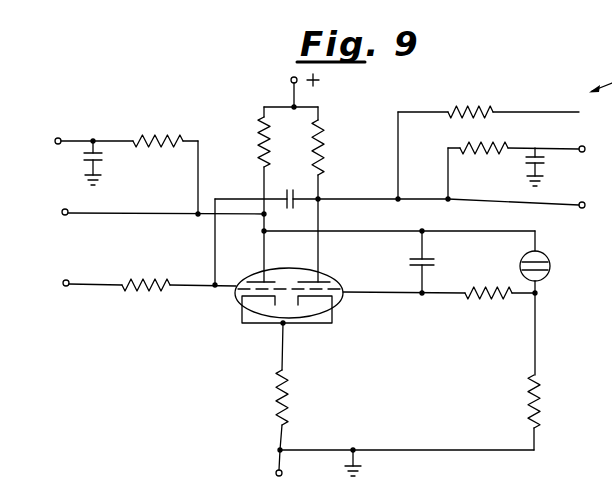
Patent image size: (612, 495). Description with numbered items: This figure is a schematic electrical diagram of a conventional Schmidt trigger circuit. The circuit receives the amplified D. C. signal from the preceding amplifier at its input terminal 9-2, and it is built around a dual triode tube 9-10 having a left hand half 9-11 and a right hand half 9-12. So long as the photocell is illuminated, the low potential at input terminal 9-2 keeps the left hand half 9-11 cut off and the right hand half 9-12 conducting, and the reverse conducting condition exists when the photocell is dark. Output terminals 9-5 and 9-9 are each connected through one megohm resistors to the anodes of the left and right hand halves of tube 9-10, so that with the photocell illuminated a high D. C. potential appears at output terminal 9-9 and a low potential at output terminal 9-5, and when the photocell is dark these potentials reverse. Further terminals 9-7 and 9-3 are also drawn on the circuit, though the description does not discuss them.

The output terminal 9-9 is at (55, 141).
The input terminal 9-7 is at (64, 209).
The input terminal 9-2 is at (63, 283).
The output terminal 9-5 is at (584, 152).
The output terminal 9-3 is at (584, 208).
The dual triode tube 9-10 is at (368, 267).
The left hand half 9-11 is at (242, 299).
The right hand half 9-12 is at (334, 308).